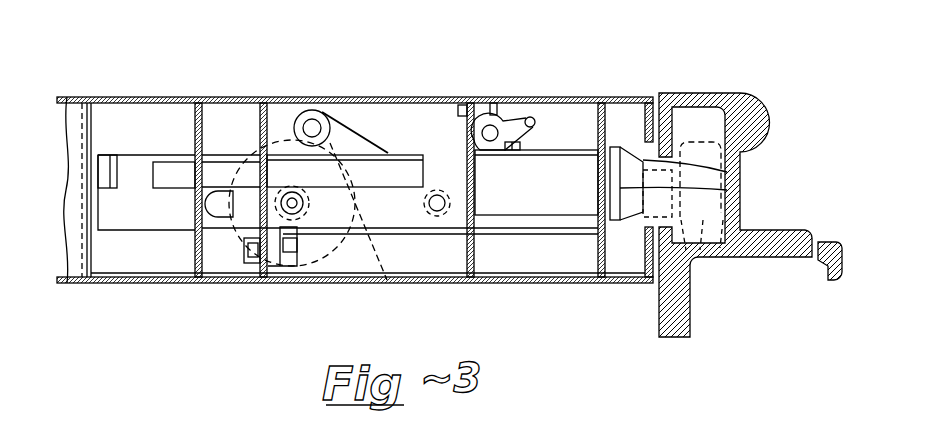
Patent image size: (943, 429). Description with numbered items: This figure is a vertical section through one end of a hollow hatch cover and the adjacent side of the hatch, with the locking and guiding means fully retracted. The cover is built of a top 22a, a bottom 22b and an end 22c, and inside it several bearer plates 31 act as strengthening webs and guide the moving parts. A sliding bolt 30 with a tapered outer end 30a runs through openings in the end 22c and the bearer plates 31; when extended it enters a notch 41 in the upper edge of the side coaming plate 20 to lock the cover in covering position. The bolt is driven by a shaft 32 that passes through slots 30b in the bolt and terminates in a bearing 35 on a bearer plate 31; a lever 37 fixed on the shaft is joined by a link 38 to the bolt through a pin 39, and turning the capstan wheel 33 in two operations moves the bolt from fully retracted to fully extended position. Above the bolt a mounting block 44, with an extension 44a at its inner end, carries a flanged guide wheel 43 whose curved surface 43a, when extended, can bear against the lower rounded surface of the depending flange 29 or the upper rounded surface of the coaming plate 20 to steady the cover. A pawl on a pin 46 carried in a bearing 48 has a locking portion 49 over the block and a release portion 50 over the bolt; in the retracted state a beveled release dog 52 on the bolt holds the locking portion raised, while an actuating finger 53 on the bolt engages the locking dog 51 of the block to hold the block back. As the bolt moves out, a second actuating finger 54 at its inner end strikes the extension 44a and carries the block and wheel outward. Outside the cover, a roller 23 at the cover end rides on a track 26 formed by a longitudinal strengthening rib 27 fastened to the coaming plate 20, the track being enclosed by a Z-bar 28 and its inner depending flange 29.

The side coaming plate 20 is at (665, 324).
The top 22a is at (167, 97).
The bottom 22b is at (113, 284).
The end 22c is at (644, 95).
The roller 23 is at (718, 255).
The track 26 is at (750, 254).
The longitudinal strengthening rib 27 is at (792, 259).
The Z-bar 28 is at (720, 92).
The depending flange 29 is at (673, 118).
The sliding bolt 30 is at (178, 220).
The tapered outer end 30a is at (633, 222).
The slot 30b is at (217, 200).
The bearer plate 31 is at (259, 266).
The shaft 32 is at (293, 207).
The capstan wheel 33 is at (386, 283).
The bearing 35 is at (300, 222).
The lever 37 is at (292, 147).
The link 38 is at (350, 143).
The pin 39 is at (457, 214).
The notch 41 is at (708, 264).
The flanged guide wheel 43 is at (740, 192).
The curved surface 43a is at (740, 171).
The mounting block 44 is at (585, 128).
The extension 44a is at (176, 172).
The pin 46 is at (466, 127).
The bearing 48 is at (482, 113).
The locking portion 49 is at (511, 122).
The release portion 50 is at (520, 132).
The locking dog 51 is at (508, 151).
The release dog 52 is at (495, 151).
The actuating finger 53 is at (535, 153).
The actuating finger 54 is at (101, 167).